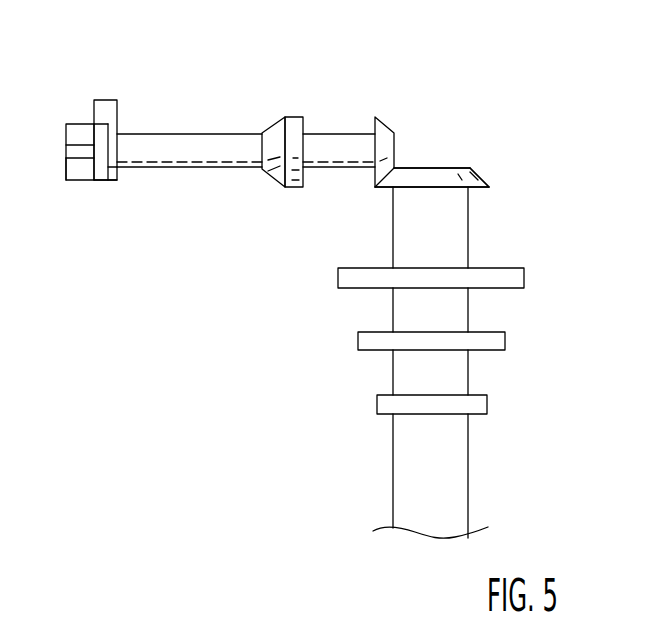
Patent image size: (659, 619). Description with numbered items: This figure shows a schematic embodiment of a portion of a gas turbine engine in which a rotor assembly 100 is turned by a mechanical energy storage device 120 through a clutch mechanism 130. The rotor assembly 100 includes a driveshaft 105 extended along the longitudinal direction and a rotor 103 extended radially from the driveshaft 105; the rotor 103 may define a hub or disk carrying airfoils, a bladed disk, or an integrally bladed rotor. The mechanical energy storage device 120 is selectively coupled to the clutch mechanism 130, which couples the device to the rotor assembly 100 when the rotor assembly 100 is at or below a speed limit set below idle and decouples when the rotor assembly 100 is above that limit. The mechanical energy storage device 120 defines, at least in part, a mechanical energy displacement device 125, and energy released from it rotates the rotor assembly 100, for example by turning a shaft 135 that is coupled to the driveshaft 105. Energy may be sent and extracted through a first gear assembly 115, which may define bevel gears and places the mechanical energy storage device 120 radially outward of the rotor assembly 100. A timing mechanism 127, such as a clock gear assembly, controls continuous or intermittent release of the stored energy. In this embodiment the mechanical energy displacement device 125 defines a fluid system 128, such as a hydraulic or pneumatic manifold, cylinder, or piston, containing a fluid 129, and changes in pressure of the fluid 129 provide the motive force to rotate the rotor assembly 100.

The rotor assembly 100 is at (485, 362).
The rotor 103 is at (480, 403).
The driveshaft 105 is at (453, 457).
The first gear assembly 115 is at (409, 151).
The mechanical energy storage device 120 is at (82, 132).
The mechanical energy displacement device 125 is at (103, 178).
The timing mechanism 127 is at (117, 100).
The fluid system 128 is at (98, 167).
The fluid 129 is at (107, 169).
The clutch mechanism 130 is at (303, 102).
The shaft 135 is at (238, 135).